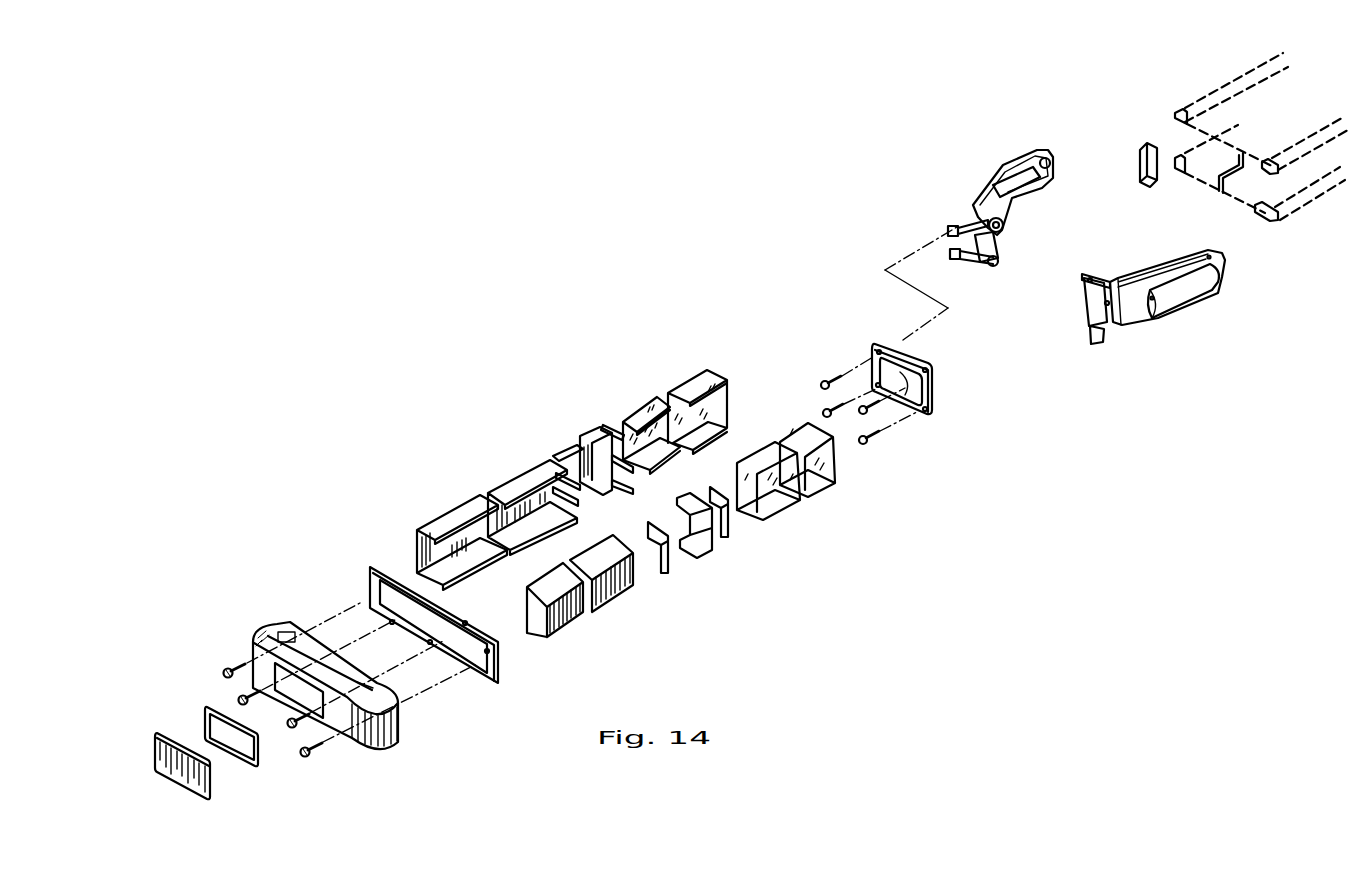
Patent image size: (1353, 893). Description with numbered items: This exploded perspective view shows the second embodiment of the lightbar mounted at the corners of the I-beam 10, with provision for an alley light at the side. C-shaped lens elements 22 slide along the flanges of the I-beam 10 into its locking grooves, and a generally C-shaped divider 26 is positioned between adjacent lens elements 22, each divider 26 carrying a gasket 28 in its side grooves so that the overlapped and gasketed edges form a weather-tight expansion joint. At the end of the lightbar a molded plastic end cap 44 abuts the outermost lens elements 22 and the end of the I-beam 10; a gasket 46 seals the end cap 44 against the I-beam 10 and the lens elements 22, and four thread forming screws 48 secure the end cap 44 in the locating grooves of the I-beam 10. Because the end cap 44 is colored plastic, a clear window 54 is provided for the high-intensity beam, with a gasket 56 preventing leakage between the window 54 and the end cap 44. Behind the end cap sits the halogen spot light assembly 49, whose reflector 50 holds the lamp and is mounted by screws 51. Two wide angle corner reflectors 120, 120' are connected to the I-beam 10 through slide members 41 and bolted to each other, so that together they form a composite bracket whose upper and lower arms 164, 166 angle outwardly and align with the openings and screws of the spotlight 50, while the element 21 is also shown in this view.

The I-beam 10 is at (1265, 140).
The reflector blocks 21 is at (827, 481).
The lens element 22 is at (613, 608).
The divider 26 is at (583, 450).
The gasket 28 is at (665, 585).
The slide member 41 is at (1140, 174).
The end cap 44 is at (400, 727).
The gasket 46 is at (370, 570).
The thread forming screw 48 is at (312, 748).
The halogen spot light assembly 49 is at (907, 283).
The reflector 50 is at (934, 404).
The screw 51 is at (824, 410).
The window 54 is at (212, 777).
The gasket 56 is at (207, 710).
The wide angle reflector 120 is at (1186, 292).
The wide angle reflector 120' is at (994, 188).
The upper arm 164 is at (950, 230).
The lower arm 166 is at (963, 262).